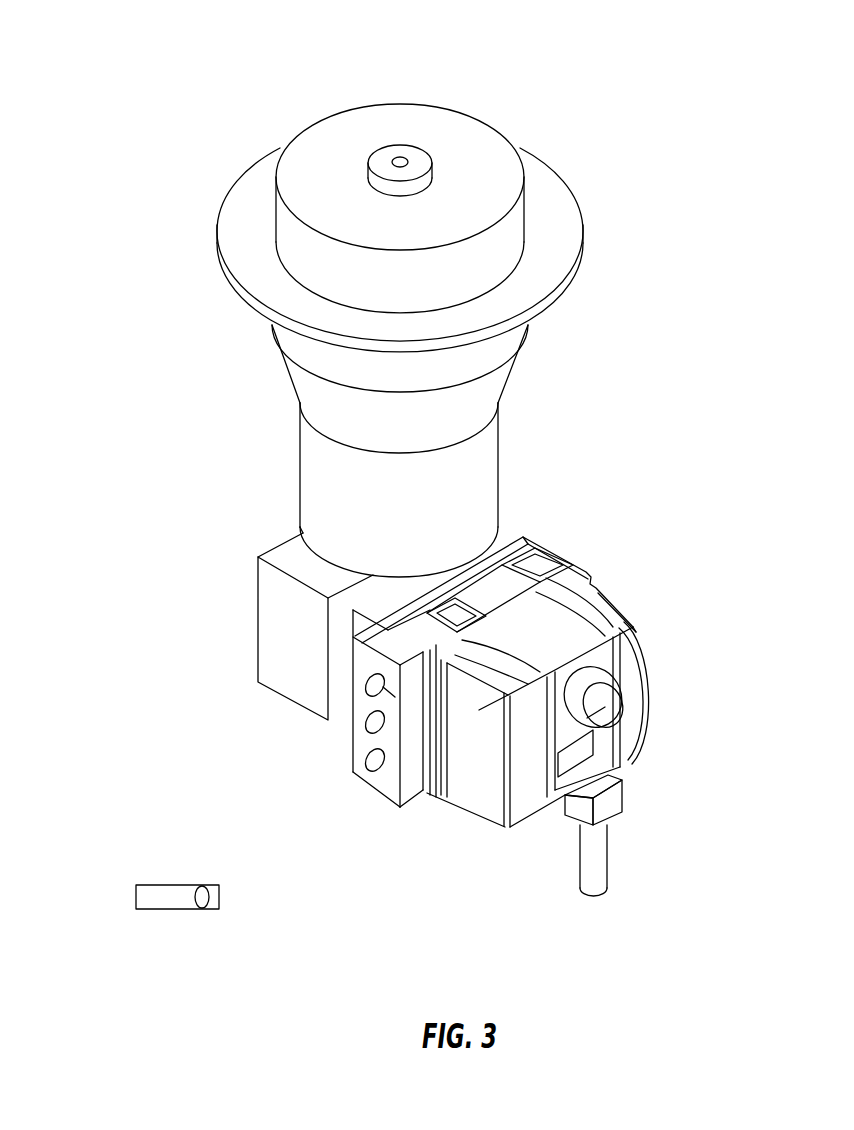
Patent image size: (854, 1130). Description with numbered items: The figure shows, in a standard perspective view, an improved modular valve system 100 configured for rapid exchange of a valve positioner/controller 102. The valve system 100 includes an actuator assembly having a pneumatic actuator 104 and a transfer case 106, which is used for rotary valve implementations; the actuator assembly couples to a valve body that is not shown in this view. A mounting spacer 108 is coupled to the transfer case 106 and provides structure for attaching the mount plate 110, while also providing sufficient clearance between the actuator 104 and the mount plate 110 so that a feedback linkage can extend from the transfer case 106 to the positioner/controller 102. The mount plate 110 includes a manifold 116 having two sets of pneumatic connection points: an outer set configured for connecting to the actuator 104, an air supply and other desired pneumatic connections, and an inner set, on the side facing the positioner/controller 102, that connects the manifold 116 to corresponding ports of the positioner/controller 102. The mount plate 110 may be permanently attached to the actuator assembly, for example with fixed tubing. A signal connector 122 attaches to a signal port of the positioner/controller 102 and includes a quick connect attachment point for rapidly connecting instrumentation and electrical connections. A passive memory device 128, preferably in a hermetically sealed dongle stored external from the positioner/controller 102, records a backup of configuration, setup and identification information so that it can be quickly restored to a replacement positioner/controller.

The modular valve system 100 is at (195, 50).
The valve positioner/controller 102 is at (622, 613).
The pneumatic actuator 104 is at (553, 215).
The transfer case 106 is at (277, 599).
The mounting spacer 108 is at (293, 540).
The mount plate 110 is at (508, 532).
The manifold 116 is at (358, 771).
The signal connector 122 is at (575, 805).
The passive memory device 128 is at (165, 895).